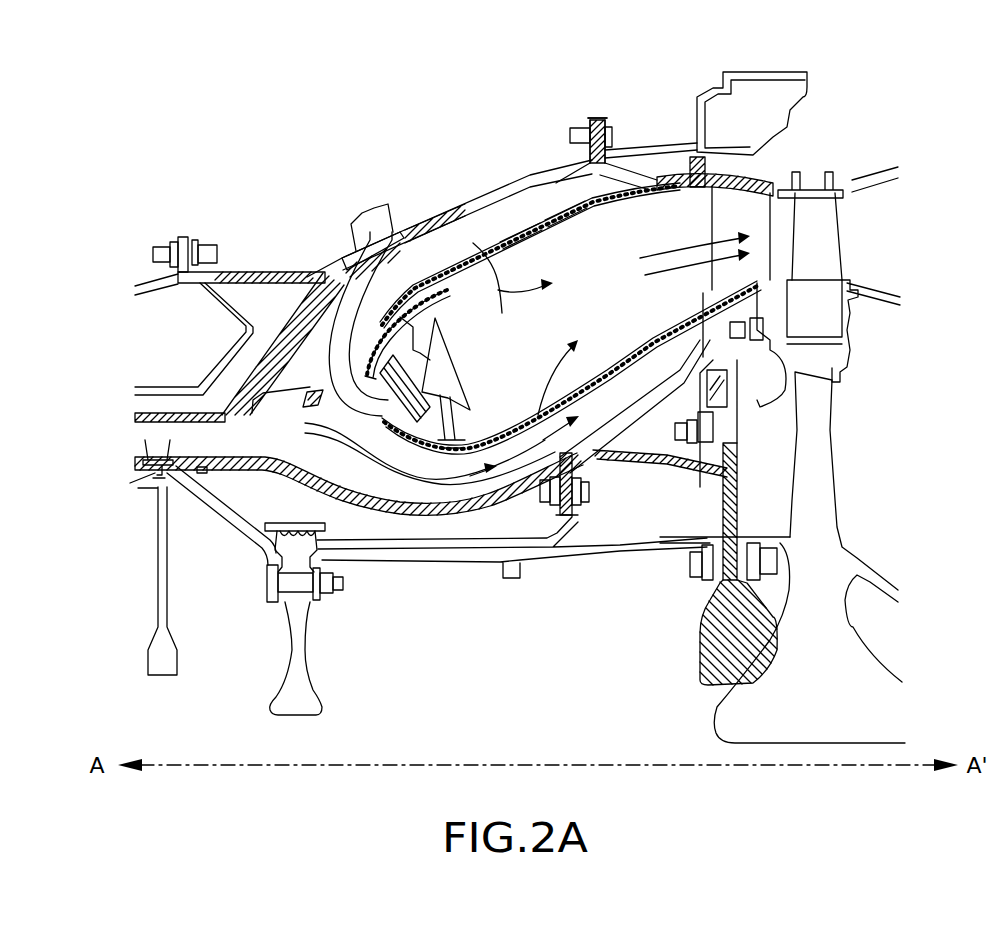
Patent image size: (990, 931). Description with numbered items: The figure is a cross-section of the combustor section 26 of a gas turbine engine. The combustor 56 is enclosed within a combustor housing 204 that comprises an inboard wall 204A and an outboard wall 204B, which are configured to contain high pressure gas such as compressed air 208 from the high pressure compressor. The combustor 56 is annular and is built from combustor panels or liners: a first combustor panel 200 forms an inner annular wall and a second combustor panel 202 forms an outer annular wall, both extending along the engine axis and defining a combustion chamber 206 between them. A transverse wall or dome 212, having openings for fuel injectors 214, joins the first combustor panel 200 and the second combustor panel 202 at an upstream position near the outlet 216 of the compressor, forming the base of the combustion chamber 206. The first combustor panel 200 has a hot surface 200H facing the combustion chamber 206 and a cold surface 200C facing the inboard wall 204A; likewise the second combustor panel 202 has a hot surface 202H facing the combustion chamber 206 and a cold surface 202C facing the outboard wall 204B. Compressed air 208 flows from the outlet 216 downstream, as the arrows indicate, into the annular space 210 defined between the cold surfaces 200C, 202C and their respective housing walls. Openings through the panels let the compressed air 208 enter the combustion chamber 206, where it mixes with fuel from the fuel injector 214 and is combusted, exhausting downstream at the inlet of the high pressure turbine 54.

The combustor section 26 is at (622, 68).
The HPT 54 is at (862, 243).
The combustor 56 is at (460, 238).
The first combustor panel 200 is at (672, 330).
The cold surface 200C is at (618, 462).
The hot surface 200H is at (630, 467).
The second combustor panel 202 is at (640, 197).
The cold surface 202C is at (517, 230).
The hot surface 202H is at (545, 230).
The combustor housing 204 is at (325, 247).
The inboard wall 204A is at (481, 208).
The outboard wall 204B is at (473, 500).
The combustion chamber 206 is at (550, 324).
The compressed air 208 is at (345, 456).
The annular space 210 is at (585, 200).
The dome 212 is at (410, 313).
The fuel injector 214 is at (448, 385).
The outlet 216 is at (277, 400).